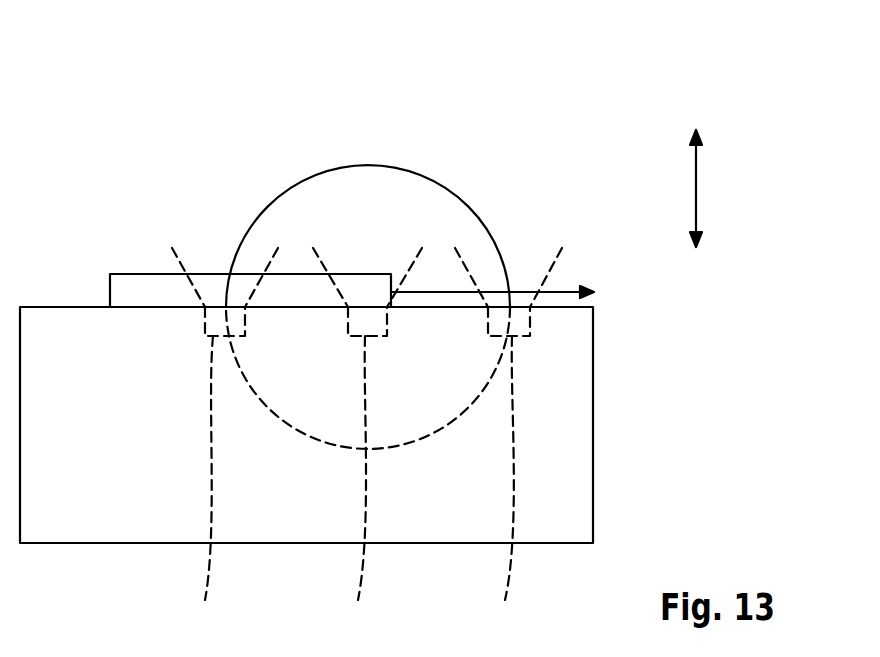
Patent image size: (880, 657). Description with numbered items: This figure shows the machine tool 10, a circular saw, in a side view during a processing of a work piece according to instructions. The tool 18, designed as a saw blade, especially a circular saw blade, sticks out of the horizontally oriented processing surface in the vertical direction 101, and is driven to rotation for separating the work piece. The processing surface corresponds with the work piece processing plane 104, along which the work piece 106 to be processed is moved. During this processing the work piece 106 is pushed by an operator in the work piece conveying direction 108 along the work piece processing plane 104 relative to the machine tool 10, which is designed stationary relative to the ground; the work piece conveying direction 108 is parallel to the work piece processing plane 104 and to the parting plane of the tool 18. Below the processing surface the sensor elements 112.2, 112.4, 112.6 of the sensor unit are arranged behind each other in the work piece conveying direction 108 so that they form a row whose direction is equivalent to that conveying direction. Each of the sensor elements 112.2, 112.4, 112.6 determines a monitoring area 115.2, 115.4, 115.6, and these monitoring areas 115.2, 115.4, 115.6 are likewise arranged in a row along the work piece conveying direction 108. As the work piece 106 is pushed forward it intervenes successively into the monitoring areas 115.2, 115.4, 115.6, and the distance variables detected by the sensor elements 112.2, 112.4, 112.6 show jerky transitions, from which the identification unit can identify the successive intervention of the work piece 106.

The machine tool 10 is at (637, 115).
The tool 18 is at (415, 190).
The vertical direction 101 is at (696, 187).
The work piece processing plane 104 is at (70, 294).
The work piece 106 is at (135, 285).
The work piece conveying direction 108 is at (557, 275).
The sensor element 112.2 is at (206, 484).
The sensor element 112.4 is at (364, 484).
The sensor element 112.6 is at (510, 484).
The monitoring area 115.2 is at (210, 246).
The monitoring area 115.4 is at (362, 246).
The monitoring area 115.6 is at (534, 246).